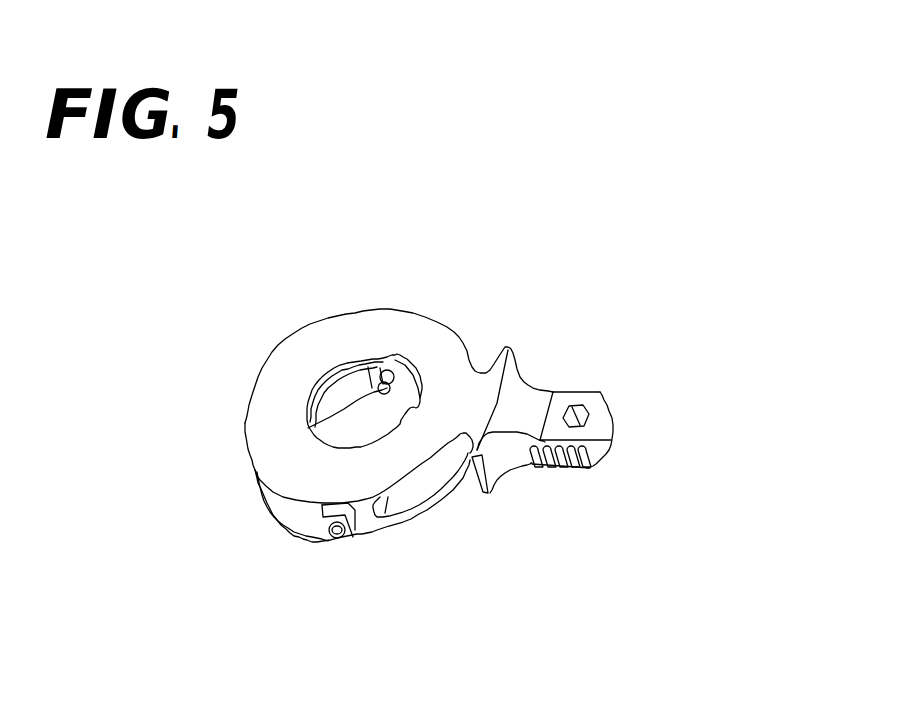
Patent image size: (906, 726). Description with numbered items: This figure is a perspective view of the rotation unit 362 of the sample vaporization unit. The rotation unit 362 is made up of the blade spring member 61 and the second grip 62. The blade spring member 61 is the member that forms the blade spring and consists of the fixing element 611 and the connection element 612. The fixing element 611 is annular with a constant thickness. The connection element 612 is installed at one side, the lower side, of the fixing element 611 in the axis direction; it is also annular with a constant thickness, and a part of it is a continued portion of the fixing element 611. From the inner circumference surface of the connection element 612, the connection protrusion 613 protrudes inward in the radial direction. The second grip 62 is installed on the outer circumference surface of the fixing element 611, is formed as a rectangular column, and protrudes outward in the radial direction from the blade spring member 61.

The blade spring member 61 is at (392, 307).
The fixing element 611 is at (264, 383).
The connection element 612 is at (297, 530).
The connection protrusion 613 is at (383, 391).
The second grip 62 is at (603, 408).
The rotation unit 362 is at (665, 320).